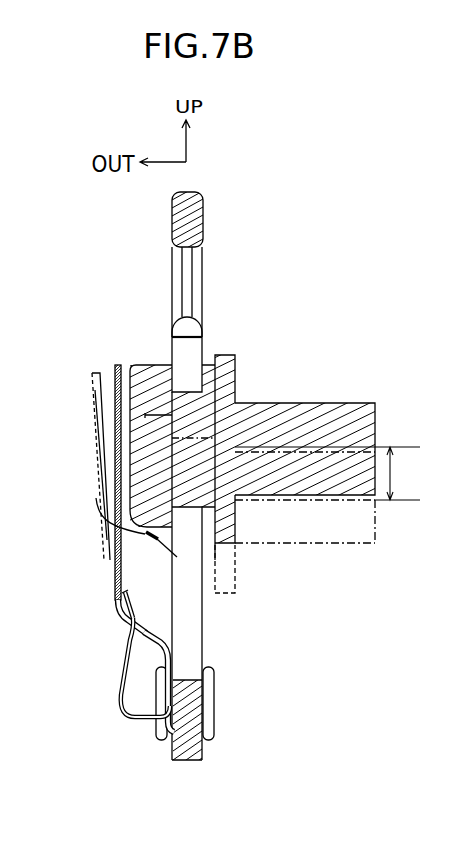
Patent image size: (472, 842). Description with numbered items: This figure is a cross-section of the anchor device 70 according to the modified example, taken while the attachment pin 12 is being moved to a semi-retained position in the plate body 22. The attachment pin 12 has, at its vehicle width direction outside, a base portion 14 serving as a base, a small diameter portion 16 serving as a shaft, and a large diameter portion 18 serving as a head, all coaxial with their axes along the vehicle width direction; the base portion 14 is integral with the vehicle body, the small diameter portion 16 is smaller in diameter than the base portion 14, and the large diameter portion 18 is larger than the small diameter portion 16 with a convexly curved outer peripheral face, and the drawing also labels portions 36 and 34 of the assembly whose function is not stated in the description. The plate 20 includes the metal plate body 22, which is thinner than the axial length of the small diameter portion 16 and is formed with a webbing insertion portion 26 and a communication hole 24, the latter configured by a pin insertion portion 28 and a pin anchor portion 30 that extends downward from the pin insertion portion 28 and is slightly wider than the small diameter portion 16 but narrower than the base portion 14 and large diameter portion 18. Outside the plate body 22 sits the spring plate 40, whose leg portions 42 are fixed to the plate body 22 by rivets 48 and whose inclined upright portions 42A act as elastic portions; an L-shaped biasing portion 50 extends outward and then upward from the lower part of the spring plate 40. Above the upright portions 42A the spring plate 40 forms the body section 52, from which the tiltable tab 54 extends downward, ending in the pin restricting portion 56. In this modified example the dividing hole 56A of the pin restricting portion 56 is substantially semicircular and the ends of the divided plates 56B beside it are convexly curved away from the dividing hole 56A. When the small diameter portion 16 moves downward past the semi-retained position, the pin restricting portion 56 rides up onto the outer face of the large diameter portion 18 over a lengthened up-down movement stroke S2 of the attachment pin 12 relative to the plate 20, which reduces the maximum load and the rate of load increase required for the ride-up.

The attachment pin 12 is at (319, 398).
The base portion 14 is at (221, 357).
The small diameter portion 16 is at (160, 413).
The large diameter portion 18 is at (147, 365).
The plate 20 is at (177, 261).
The plate body 22 is at (203, 223).
The communication hole 24 is at (230, 633).
The webbing insertion portion 26 is at (187, 288).
The pin insertion portion 28 is at (231, 371).
The pin anchor portion 30 is at (183, 653).
The bolt tip 34 is at (185, 331).
The tip end portion 36 is at (143, 302).
The spring plate 40 is at (112, 360).
The leg portions 42 is at (114, 660).
The upright portions 42A is at (157, 645).
The rivets 48 is at (212, 713).
The biasing portion 50 is at (123, 630).
The body section 52 is at (112, 408).
The tiltable tab 54 is at (112, 438).
The pin restricting portion 56 is at (168, 534).
The dividing hole 56A is at (178, 557).
The divided plates 56B is at (112, 560).
The anchor device 70 is at (255, 481).
The movement stroke S2 is at (393, 476).